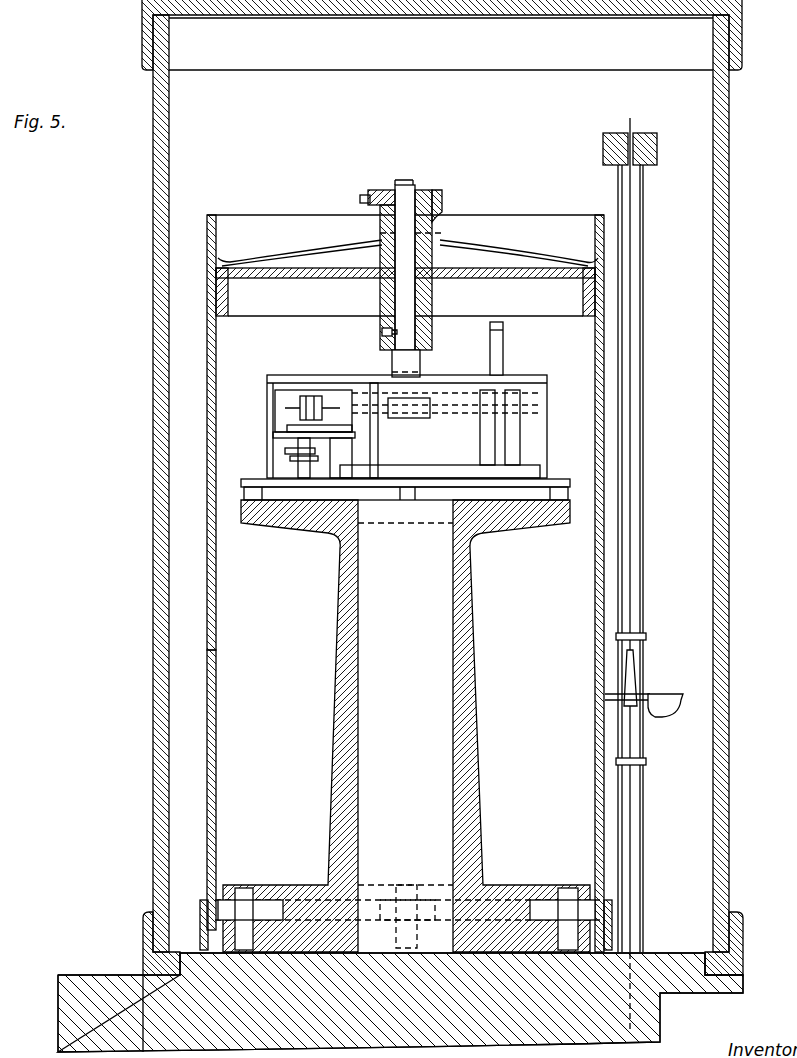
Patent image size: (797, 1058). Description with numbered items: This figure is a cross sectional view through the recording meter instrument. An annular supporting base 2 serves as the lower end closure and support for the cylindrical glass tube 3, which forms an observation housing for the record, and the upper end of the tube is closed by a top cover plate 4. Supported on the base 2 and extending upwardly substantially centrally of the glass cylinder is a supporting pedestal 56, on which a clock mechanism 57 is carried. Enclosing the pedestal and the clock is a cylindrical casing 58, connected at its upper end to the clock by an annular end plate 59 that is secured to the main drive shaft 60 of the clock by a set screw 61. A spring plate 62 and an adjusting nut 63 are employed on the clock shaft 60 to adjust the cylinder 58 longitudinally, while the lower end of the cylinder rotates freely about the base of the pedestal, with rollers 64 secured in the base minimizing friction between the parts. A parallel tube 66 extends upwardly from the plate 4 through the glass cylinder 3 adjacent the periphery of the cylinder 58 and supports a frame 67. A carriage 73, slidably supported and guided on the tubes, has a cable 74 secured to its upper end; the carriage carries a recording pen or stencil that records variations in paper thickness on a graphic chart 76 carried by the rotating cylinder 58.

The annular supporting base 2 is at (103, 985).
The cylindrical glass tube 3 is at (151, 352).
The top cover plate 4 is at (143, 38).
The supporting pedestal 56 is at (477, 661).
The clock mechanism 57 is at (292, 447).
The cylindrical casing 58 is at (218, 612).
The annular end plate 59 is at (312, 305).
The main drive shaft 60 is at (394, 358).
The set screw 61 is at (381, 333).
The spring plate 62 is at (300, 253).
The adjusting nut 63 is at (371, 212).
The rollers 64 is at (262, 903).
The tube 66 is at (645, 223).
The frame 67 is at (650, 136).
The carriage 73 is at (640, 656).
The cable 74 is at (641, 320).
The graphic chart 76 is at (207, 713).